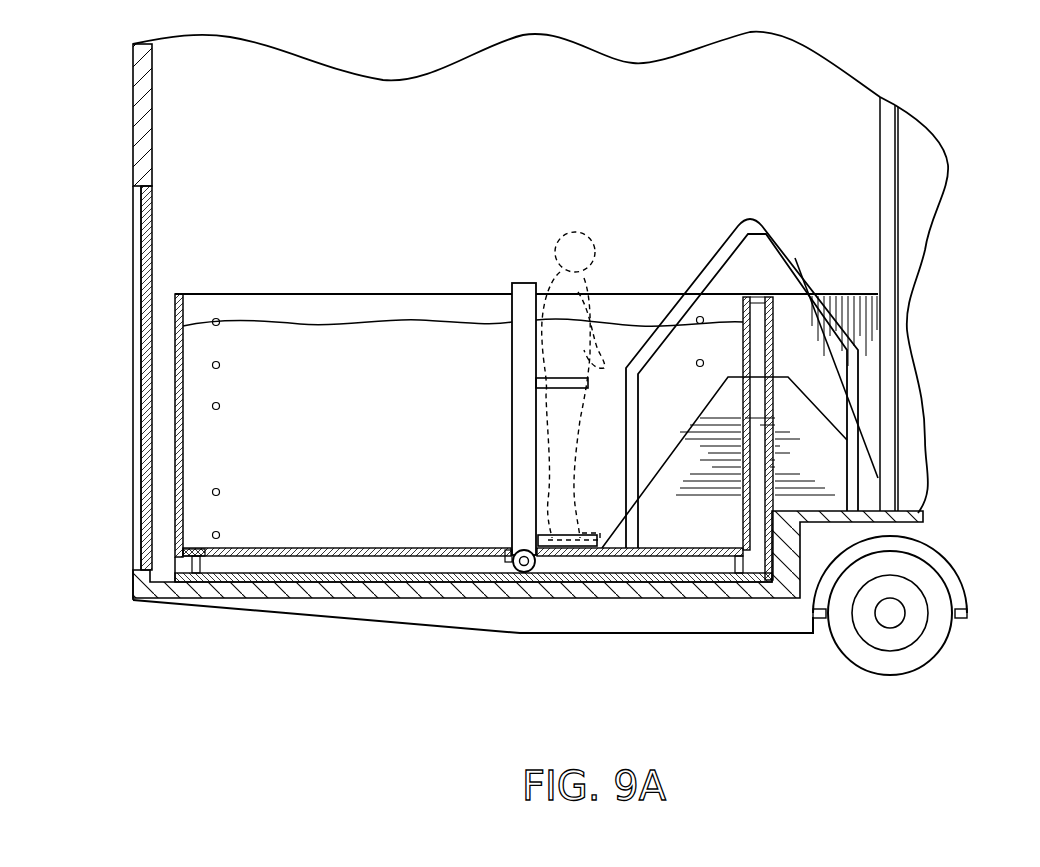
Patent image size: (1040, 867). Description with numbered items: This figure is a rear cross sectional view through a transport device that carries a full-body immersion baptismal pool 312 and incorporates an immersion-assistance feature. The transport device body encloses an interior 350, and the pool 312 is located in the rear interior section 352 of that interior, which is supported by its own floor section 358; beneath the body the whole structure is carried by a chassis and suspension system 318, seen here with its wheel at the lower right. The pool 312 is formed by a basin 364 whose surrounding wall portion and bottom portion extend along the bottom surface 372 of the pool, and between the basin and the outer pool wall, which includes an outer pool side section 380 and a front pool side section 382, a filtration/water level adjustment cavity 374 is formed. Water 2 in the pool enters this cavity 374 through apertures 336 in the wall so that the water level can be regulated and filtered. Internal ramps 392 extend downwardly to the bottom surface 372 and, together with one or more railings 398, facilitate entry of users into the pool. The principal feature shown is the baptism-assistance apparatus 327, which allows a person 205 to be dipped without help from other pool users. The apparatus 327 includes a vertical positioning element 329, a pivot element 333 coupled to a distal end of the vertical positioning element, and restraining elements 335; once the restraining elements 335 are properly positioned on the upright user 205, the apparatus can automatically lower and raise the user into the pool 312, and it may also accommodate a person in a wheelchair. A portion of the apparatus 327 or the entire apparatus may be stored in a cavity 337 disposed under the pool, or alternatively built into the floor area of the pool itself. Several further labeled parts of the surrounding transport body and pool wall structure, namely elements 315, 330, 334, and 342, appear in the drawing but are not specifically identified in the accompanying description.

The water 2 is at (385, 322).
The person 205 is at (567, 228).
The full-body immersion baptismal pool 312 is at (640, 290).
The wall 315 is at (215, 133).
The chassis and suspension system 318 is at (963, 617).
The baptism-assistance apparatus 327 is at (508, 385).
The vertical positioning element 329 is at (512, 309).
The wheel 330 is at (862, 663).
The pivot element 333 is at (510, 553).
The wall panel 334 is at (140, 433).
The restraining elements 335 is at (550, 402).
The apertures 336 is at (213, 407).
The cavity 337 is at (403, 545).
The wall liner 342 is at (141, 300).
The interior 350 is at (418, 137).
The rear interior section 352 is at (766, 131).
The floor section 358 is at (632, 600).
The basin 364 is at (175, 497).
The bottom surface 372 is at (346, 548).
The filtration/water level adjustment cavity 374 is at (575, 565).
The outer pool side section 380 is at (198, 556).
The front pool side section 382 is at (773, 350).
The internal ramps 392 is at (690, 540).
The railings 398 is at (703, 288).